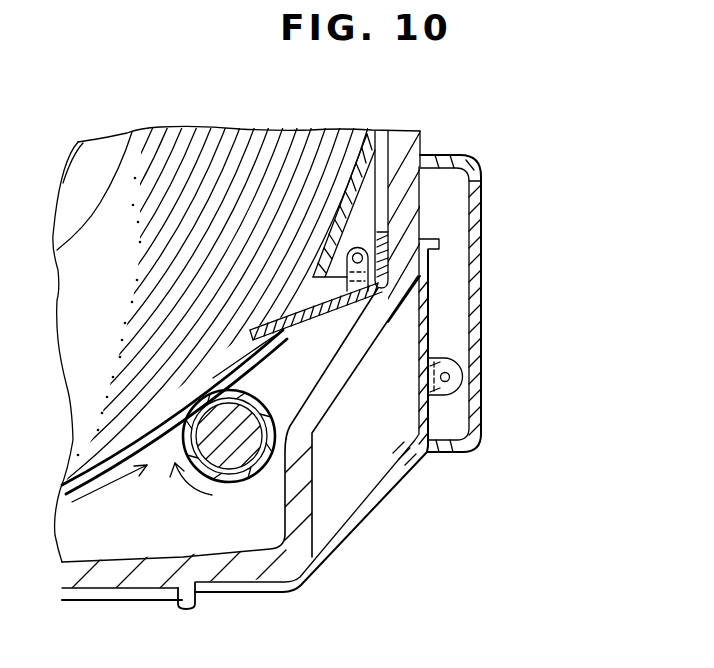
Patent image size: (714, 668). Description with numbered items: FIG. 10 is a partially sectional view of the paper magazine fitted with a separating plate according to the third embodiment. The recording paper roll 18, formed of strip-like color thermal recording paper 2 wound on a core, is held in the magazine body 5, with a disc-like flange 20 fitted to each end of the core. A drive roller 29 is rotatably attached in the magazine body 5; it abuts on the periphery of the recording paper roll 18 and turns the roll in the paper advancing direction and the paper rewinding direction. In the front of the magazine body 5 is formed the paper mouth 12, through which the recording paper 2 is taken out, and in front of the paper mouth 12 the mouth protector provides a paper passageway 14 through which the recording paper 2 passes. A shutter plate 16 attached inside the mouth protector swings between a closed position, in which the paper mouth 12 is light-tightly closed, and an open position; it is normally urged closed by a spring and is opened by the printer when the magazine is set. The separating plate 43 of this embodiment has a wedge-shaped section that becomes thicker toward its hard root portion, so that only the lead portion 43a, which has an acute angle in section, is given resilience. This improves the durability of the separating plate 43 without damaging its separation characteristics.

The flange 20 is at (108, 122).
The recording paper roll 18 is at (368, 144).
The paper passageway 14 is at (482, 226).
The paper mouth 12 is at (393, 287).
The lead portion 43a is at (268, 330).
The separating plate 43 is at (323, 324).
The recording paper 2 is at (262, 380).
The shutter plate 16 is at (450, 413).
The magazine body 5 is at (402, 501).
The drive roller 29 is at (241, 500).